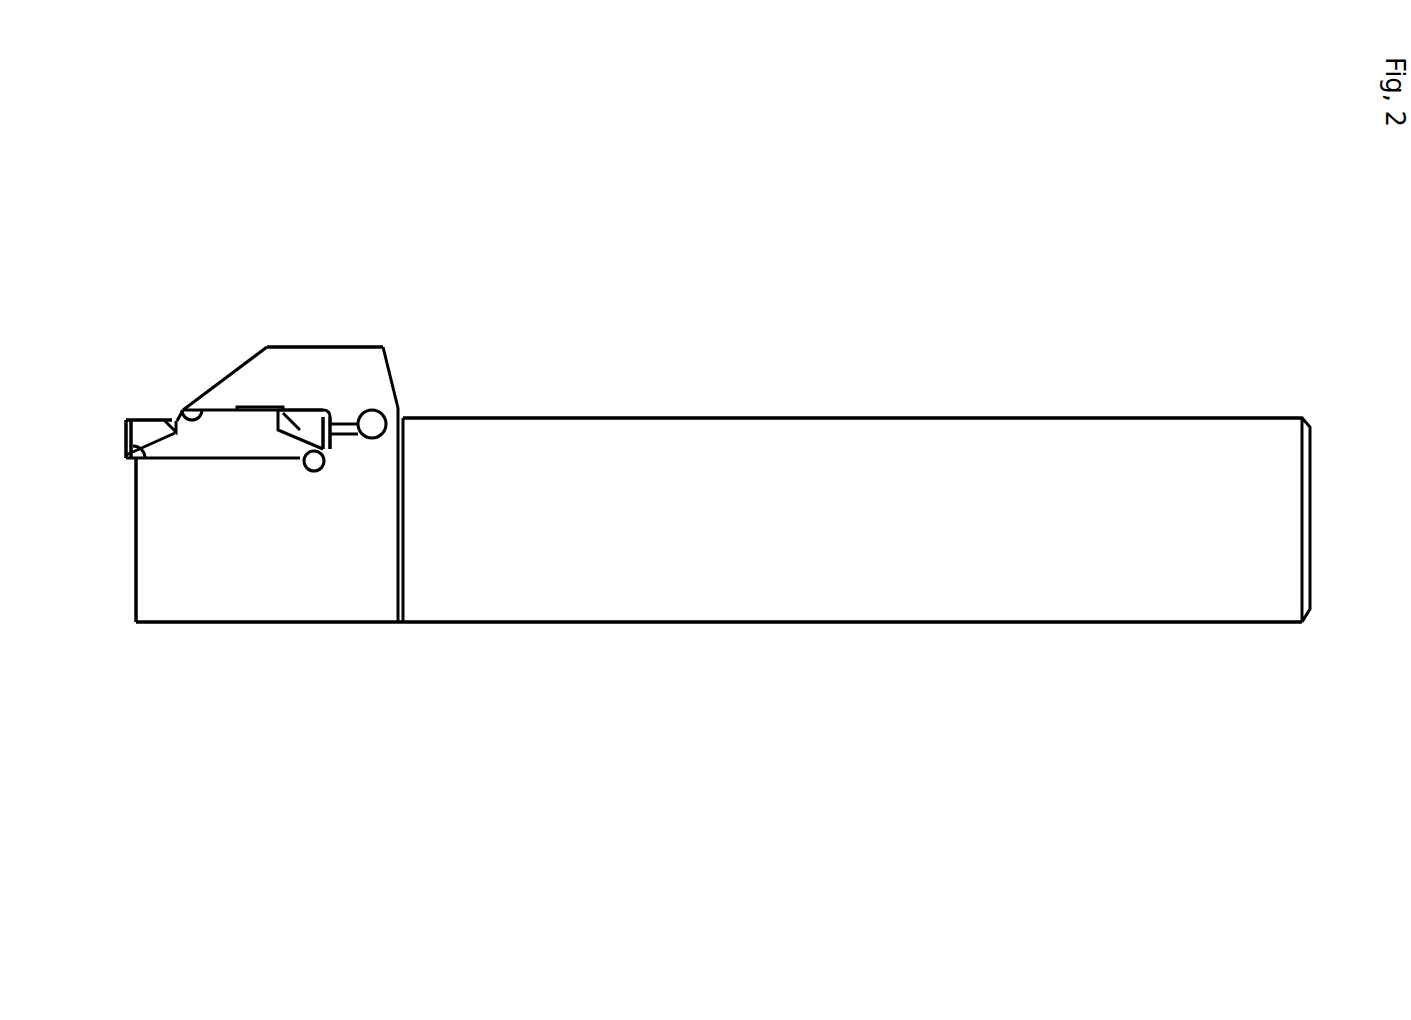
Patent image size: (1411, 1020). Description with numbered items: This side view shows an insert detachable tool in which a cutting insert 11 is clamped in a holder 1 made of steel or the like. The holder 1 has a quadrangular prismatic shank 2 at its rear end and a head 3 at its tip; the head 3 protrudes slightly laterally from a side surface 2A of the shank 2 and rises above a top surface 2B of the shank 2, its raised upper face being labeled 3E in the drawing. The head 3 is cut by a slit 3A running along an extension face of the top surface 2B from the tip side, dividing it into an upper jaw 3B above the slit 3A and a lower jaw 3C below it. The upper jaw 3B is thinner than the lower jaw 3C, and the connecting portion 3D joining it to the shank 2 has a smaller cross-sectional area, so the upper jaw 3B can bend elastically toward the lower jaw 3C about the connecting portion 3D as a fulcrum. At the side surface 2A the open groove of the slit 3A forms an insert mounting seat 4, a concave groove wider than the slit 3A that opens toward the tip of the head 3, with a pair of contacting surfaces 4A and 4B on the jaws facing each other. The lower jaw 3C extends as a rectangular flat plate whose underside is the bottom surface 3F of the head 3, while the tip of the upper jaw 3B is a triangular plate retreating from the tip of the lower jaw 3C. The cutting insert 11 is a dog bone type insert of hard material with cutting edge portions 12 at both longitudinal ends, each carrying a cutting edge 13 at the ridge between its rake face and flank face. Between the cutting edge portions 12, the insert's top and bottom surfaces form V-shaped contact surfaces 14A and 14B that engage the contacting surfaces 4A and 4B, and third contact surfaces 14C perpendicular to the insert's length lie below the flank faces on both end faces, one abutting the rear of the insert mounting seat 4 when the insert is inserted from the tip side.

The holder 1 is at (556, 255).
The shank 2 is at (582, 350).
The side surface of the shank 2A is at (783, 593).
The top surface of the shank 2B is at (788, 418).
The head 3 is at (375, 322).
The slit 3A is at (342, 418).
The upper jaw 3B is at (262, 365).
The lower jaw 3C is at (316, 471).
The connecting portion 3D is at (397, 406).
The top surface of head 3E is at (320, 347).
The bottom surface of the head 3F is at (287, 623).
The insert mounting seat 4 is at (243, 476).
The contacting surface 4A is at (178, 412).
The contacting surface 4B is at (128, 445).
The cutting insert 11 is at (142, 375).
The cutting edge portions 12 is at (137, 410).
The cutting edges 13 is at (126, 420).
The contact surface 14A is at (223, 412).
The contact surface 14B is at (162, 462).
The third contact surfaces 14C is at (330, 450).